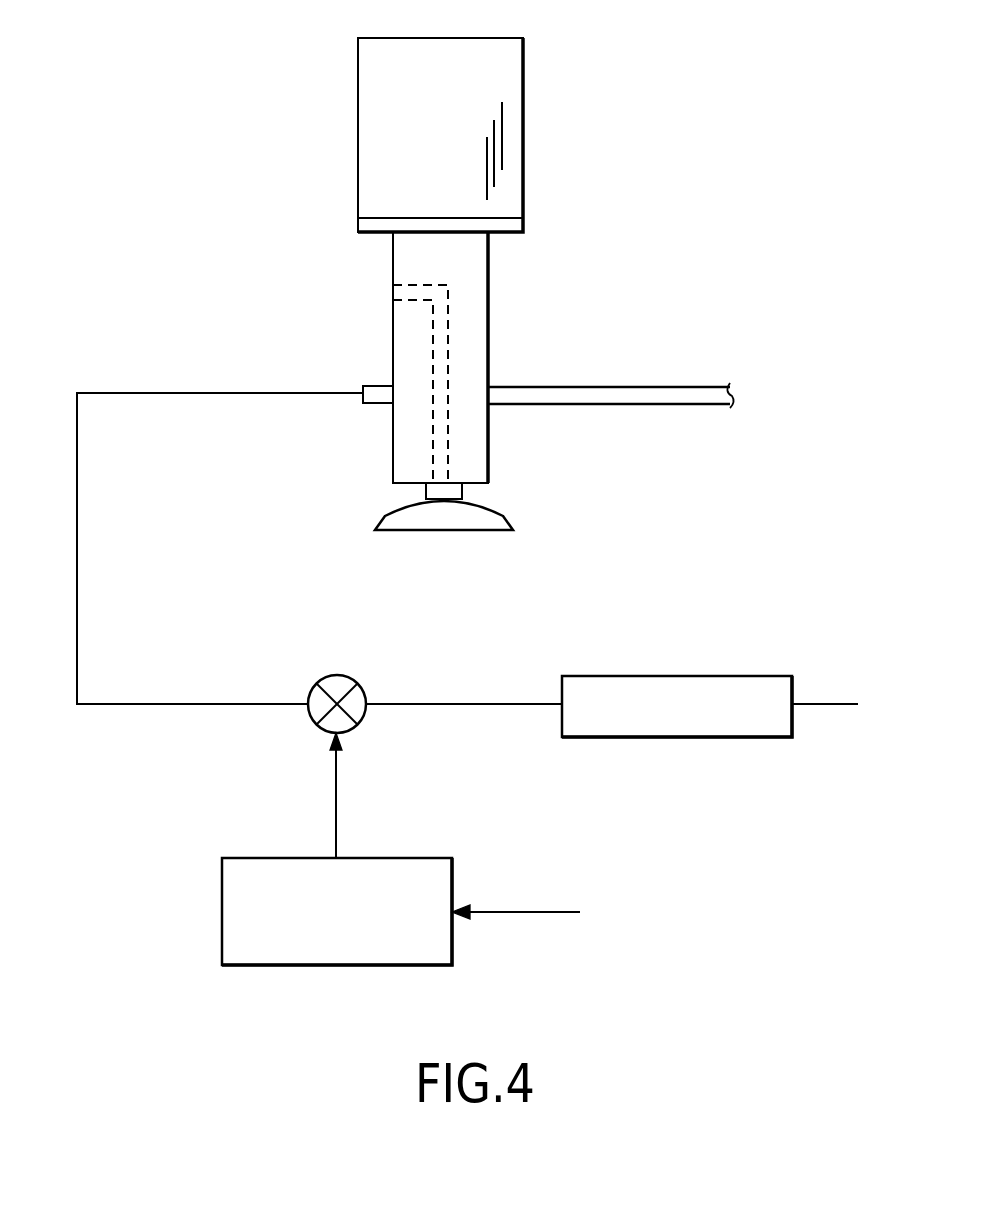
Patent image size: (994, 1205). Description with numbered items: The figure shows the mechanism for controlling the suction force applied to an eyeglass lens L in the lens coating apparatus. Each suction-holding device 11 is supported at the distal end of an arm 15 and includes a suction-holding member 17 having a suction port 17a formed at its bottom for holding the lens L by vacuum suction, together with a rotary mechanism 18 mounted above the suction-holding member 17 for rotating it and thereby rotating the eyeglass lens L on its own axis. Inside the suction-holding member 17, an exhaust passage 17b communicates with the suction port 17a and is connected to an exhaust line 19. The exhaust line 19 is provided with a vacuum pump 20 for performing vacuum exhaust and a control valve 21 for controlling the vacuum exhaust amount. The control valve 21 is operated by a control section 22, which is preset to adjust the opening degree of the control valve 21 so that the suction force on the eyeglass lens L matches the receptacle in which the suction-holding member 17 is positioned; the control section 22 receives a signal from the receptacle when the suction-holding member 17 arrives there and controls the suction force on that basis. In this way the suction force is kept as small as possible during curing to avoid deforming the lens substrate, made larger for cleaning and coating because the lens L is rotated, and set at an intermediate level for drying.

The suction-holding device 11 is at (664, 105).
The arm 15 is at (641, 387).
The suction-holding member 17 is at (488, 295).
The suction port 17a is at (398, 505).
The exhaust passage 17b is at (448, 327).
The rotary mechanism 18 is at (523, 127).
The exhaust line 19 is at (165, 393).
The vacuum pump 20 is at (708, 676).
The control valve 21 is at (337, 675).
The control section 22 is at (405, 858).
The eyeglass lens L is at (488, 505).